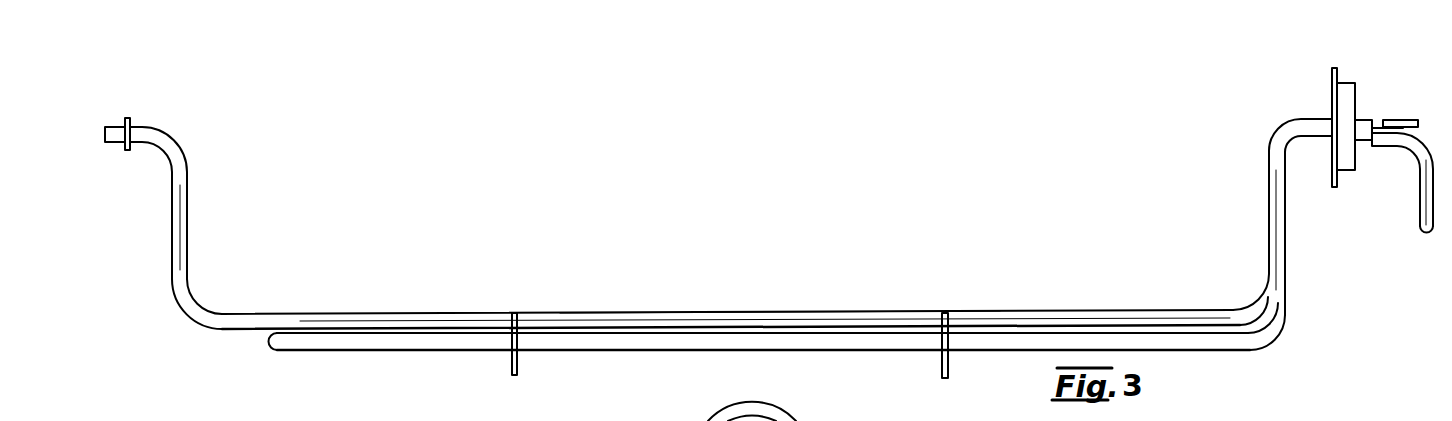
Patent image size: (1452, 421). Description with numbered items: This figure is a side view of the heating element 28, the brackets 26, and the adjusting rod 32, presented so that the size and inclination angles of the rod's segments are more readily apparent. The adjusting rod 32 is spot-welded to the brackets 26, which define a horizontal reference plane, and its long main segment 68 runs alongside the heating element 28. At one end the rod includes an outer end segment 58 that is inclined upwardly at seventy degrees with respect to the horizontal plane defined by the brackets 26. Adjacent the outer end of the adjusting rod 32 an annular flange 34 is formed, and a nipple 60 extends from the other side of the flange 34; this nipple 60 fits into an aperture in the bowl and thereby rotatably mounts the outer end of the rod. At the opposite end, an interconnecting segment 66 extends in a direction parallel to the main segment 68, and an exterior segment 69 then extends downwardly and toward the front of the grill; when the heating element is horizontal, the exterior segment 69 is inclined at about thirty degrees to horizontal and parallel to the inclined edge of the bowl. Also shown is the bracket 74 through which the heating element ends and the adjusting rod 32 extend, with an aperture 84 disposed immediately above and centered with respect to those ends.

The brackets 26 is at (518, 371).
The heating element 28 is at (672, 347).
The adjusting rod 32 is at (616, 312).
The annular flange 34 is at (126, 143).
The outer end segment 58 is at (190, 185).
The nipple 60 is at (112, 127).
The interconnecting segment 66 is at (1371, 143).
The main segment 68 is at (745, 313).
The exterior segment 69 is at (1422, 212).
The bracket 74 is at (1348, 82).
The aperture 84 is at (752, 420).